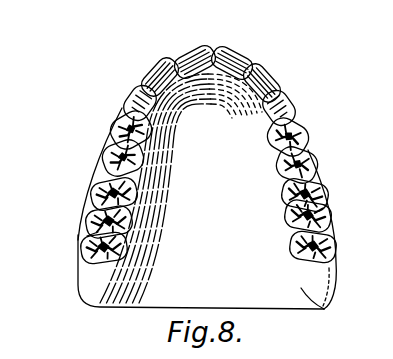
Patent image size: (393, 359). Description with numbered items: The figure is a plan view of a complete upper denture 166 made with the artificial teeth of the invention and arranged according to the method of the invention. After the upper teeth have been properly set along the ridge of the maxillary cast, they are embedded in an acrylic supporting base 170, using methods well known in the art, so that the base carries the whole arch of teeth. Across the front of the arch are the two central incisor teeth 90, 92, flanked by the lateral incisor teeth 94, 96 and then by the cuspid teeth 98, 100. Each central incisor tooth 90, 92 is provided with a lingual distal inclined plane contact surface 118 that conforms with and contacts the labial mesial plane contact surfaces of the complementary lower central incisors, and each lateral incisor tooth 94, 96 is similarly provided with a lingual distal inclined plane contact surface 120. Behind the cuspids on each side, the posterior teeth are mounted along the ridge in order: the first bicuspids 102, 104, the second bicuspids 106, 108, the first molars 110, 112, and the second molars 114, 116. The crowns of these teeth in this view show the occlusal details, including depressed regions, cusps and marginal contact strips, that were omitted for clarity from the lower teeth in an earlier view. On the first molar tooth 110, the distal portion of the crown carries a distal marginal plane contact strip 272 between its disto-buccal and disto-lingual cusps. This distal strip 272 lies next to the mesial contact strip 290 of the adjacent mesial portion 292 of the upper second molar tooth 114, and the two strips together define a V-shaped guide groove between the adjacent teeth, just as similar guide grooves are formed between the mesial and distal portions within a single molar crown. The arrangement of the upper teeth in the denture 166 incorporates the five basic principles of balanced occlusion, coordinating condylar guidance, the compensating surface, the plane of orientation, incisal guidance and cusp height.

The central incisor tooth 90 is at (191, 47).
The central incisor tooth 92 is at (229, 50).
The lateral incisor tooth 94 is at (160, 62).
The lateral incisor tooth 96 is at (265, 70).
The cuspid tooth 98 is at (133, 91).
The cuspid tooth 100 is at (292, 101).
The first bicuspid 102 is at (110, 132).
The first bicuspid 104 is at (310, 135).
The second bicuspid 106 is at (103, 163).
The second bicuspid 108 is at (322, 161).
The first molar tooth 110 is at (90, 197).
The first molar 112 is at (330, 202).
The second molar tooth 114 is at (82, 241).
The second molar 116 is at (337, 246).
The lingual distal inclined plane contact surface 118 is at (185, 56).
The lingual distal inclined plane contact surface 120 is at (152, 72).
The upper denture 166 is at (83, 289).
The acrylic supporting base 170 is at (325, 310).
The distal marginal plane contact strip 272 is at (88, 203).
The mesial contact strip 290 is at (87, 216).
The mesial portion 292 is at (133, 235).